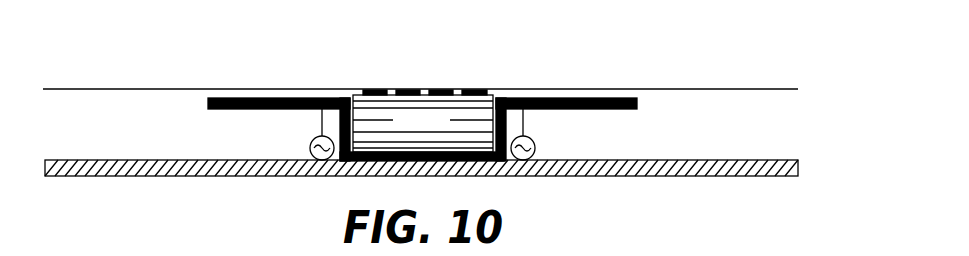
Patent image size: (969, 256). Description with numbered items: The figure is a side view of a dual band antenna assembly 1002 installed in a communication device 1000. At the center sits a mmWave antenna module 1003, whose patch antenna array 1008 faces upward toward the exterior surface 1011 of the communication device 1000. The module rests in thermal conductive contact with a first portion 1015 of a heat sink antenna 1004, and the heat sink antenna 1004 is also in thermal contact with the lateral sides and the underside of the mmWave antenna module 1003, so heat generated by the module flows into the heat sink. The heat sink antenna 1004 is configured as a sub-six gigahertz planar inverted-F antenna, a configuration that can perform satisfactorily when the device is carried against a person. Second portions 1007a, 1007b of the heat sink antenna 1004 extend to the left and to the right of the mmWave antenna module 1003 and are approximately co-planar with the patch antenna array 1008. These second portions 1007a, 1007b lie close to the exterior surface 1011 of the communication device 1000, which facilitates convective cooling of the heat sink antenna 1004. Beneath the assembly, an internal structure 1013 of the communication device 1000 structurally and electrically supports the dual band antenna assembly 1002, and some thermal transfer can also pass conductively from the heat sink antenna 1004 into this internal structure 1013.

The communication device 1000 is at (228, 50).
The dual band antenna assembly 1002 is at (343, 75).
The mmWave antenna module 1003 is at (442, 130).
The heat sink antenna 1004 is at (207, 98).
The second portion 1007a is at (230, 109).
The second portion 1007b is at (608, 110).
The patch antenna array 1008 is at (453, 83).
The exterior surface 1011 is at (552, 89).
The internal structure 1013 is at (507, 177).
The first portion 1015 is at (378, 160).